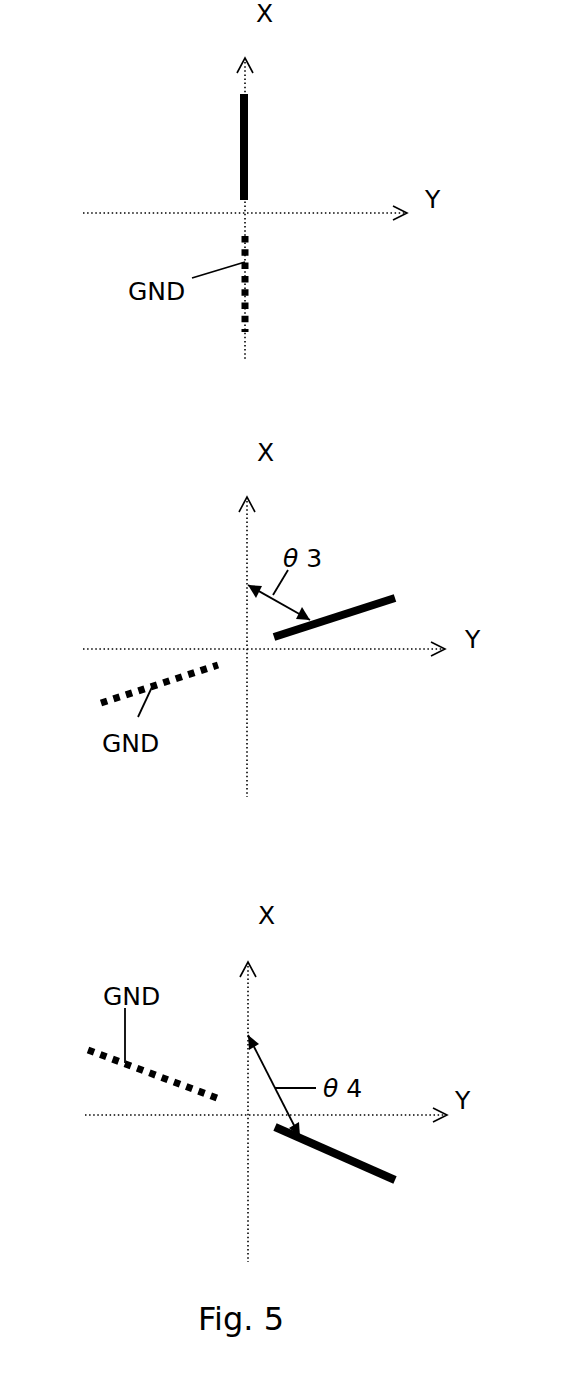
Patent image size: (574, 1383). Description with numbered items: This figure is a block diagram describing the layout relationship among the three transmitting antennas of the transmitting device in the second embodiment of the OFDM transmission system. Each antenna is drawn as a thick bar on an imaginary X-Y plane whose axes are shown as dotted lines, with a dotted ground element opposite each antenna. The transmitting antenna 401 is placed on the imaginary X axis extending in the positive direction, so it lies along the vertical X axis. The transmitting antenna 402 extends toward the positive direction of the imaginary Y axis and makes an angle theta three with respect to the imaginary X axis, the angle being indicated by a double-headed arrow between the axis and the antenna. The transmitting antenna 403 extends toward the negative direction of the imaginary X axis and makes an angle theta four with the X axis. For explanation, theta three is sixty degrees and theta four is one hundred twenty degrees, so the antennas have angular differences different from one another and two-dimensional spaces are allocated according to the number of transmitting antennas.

The transmitting antenna 401 is at (248, 145).
The transmitting antenna 402 is at (368, 597).
The transmitting antenna 403 is at (367, 1172).